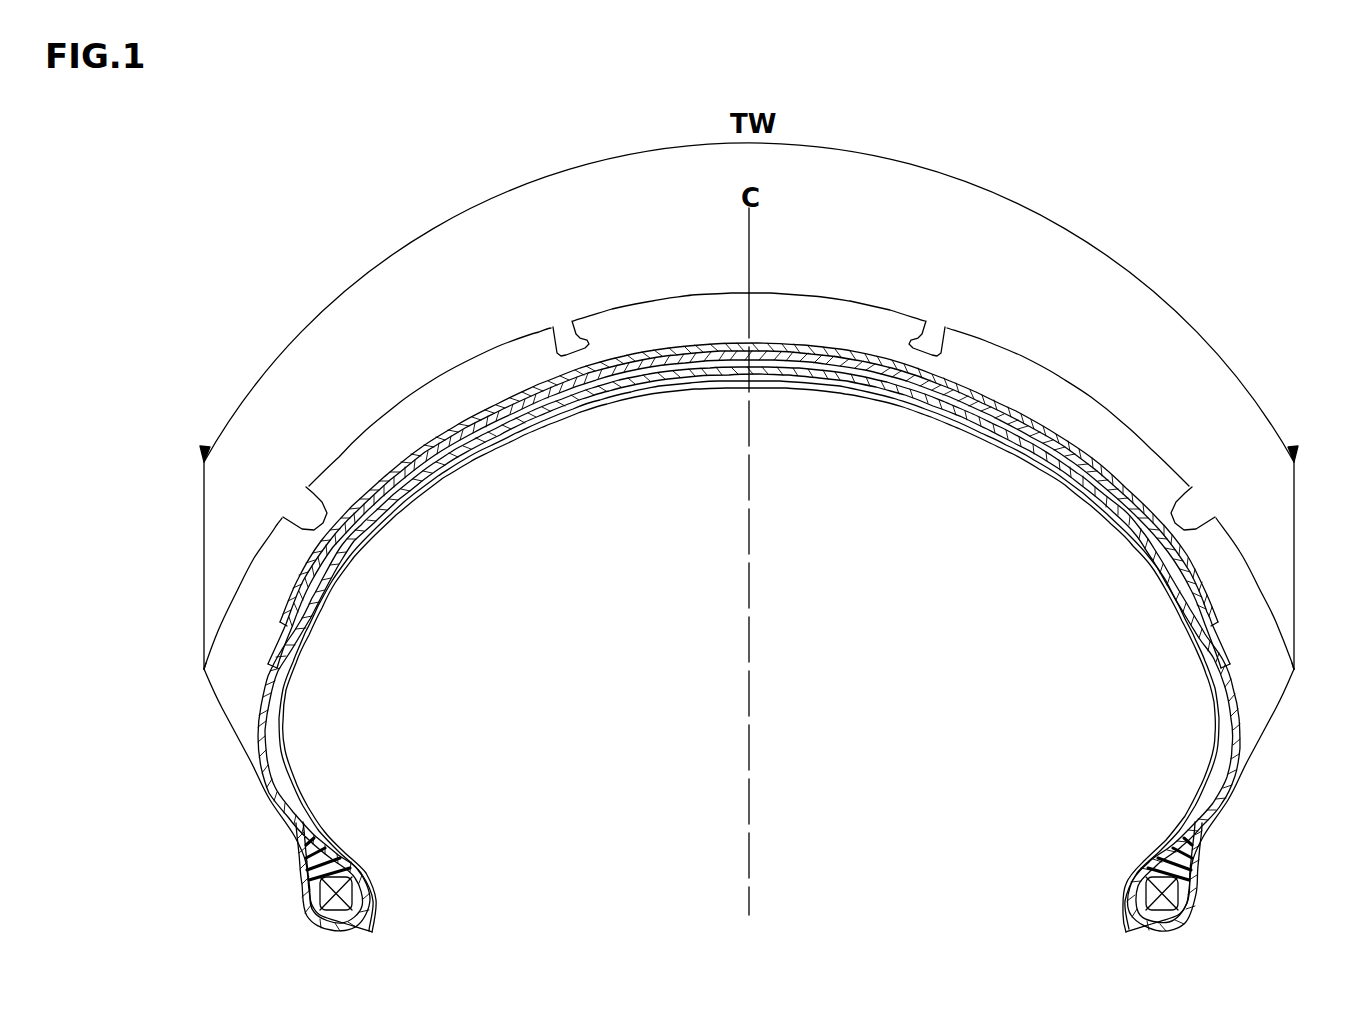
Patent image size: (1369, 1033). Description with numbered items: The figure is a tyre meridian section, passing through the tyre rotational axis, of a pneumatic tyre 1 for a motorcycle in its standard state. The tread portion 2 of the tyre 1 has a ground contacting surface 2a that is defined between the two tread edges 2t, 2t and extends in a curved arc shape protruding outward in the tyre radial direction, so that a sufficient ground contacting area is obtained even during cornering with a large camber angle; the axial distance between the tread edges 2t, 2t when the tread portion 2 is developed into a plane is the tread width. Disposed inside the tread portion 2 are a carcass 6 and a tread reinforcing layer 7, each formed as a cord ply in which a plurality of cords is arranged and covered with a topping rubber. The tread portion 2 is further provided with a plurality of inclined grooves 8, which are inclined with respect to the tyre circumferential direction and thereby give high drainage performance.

The tyre 1 is at (1147, 205).
The tread portion 2 is at (990, 303).
The ground contacting surface 2a is at (1032, 360).
The tread edges 2t is at (204, 670).
The carcass 6 is at (1183, 587).
The tread reinforcing layer 7 is at (1073, 452).
The inclined grooves 8 is at (562, 315).